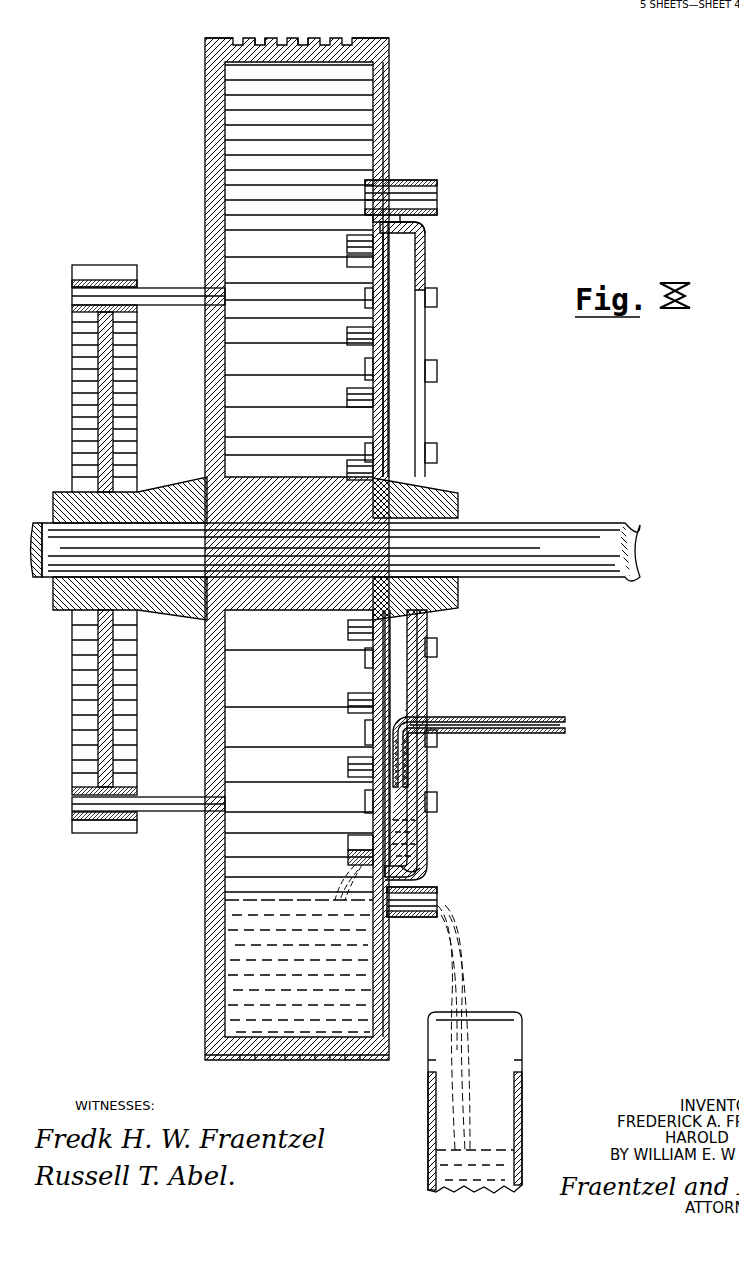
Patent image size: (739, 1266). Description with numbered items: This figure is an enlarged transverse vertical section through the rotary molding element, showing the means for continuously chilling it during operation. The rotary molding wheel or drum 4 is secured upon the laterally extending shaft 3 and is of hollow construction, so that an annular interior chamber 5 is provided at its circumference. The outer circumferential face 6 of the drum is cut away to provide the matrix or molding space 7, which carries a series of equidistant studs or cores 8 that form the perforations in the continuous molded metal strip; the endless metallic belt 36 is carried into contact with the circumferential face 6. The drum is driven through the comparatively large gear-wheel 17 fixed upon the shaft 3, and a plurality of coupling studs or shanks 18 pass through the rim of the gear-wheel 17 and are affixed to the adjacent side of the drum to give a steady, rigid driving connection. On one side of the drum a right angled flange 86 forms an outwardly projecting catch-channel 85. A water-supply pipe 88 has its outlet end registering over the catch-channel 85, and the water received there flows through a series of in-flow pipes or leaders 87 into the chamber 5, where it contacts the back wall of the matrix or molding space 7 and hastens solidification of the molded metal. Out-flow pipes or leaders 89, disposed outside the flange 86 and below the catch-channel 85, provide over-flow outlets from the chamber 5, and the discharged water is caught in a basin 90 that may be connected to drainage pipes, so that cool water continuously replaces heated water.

The shaft 3 is at (540, 545).
The rotary molding wheel or drum 4 is at (389, 62).
The annular interior chamber 5 is at (345, 120).
The outer circumferential face 6 is at (235, 38).
The matrix or molding space 7 is at (314, 38).
The studs or cores 8 is at (262, 38).
The gear-wheel 17 is at (98, 270).
The coupling studs or shanks 18 is at (178, 296).
The endless metallic belt 36 is at (250, 1062).
The catch-channel 85 is at (430, 265).
The right angled flange 86 is at (428, 232).
The in-flow pipes or leaders 87 is at (348, 255).
The water-supply pipe 88 is at (470, 717).
The out-flow pipes or leaders 89 is at (437, 200).
The basin 90 is at (495, 1104).